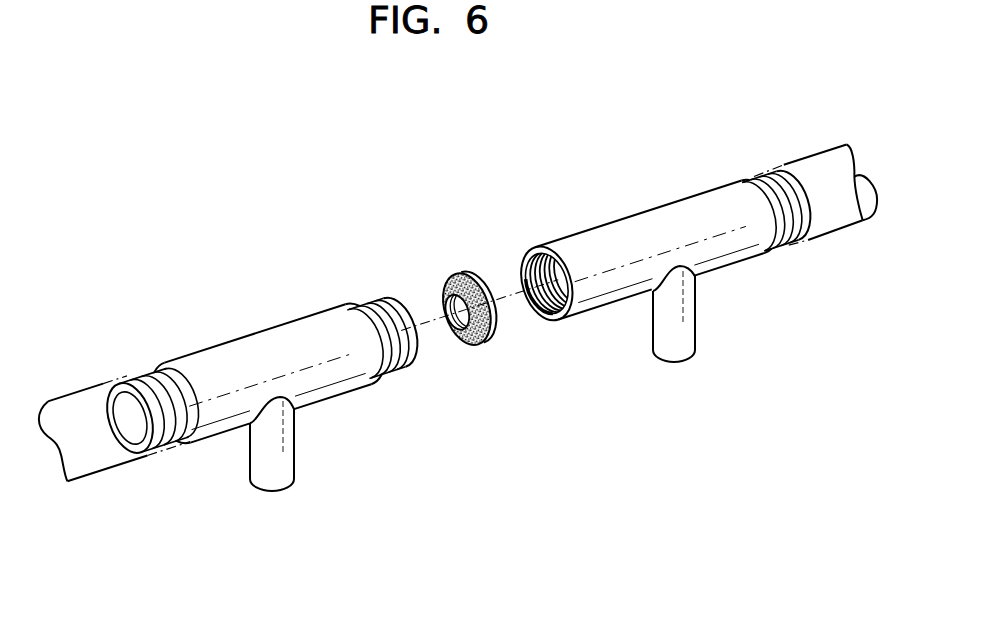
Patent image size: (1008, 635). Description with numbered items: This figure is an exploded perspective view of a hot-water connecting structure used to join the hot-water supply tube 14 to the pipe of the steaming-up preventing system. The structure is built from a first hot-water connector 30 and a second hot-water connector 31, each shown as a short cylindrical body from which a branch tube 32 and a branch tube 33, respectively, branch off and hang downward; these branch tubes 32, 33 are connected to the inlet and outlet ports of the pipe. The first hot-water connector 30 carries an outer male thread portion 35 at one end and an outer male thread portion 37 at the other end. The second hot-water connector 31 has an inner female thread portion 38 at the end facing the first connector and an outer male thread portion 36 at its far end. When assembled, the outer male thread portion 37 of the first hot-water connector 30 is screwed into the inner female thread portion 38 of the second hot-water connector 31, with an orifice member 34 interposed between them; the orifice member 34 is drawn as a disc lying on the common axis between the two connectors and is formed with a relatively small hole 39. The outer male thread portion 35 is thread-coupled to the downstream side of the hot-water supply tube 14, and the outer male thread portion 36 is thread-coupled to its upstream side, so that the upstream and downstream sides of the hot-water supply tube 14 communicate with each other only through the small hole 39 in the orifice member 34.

The hot-water supply tube 14 is at (102, 447).
The first hot-water connector 30 is at (337, 377).
The second hot-water connector 31 is at (613, 300).
The branch tube 32 is at (270, 475).
The branch tube 33 is at (685, 347).
The orifice member 34 is at (467, 275).
The outer male thread portion 35 is at (145, 380).
The outer male thread portion 36 is at (765, 173).
The outer male thread portion 37 is at (380, 300).
The inner female thread portion 38 is at (532, 257).
The small hole 39 is at (457, 325).